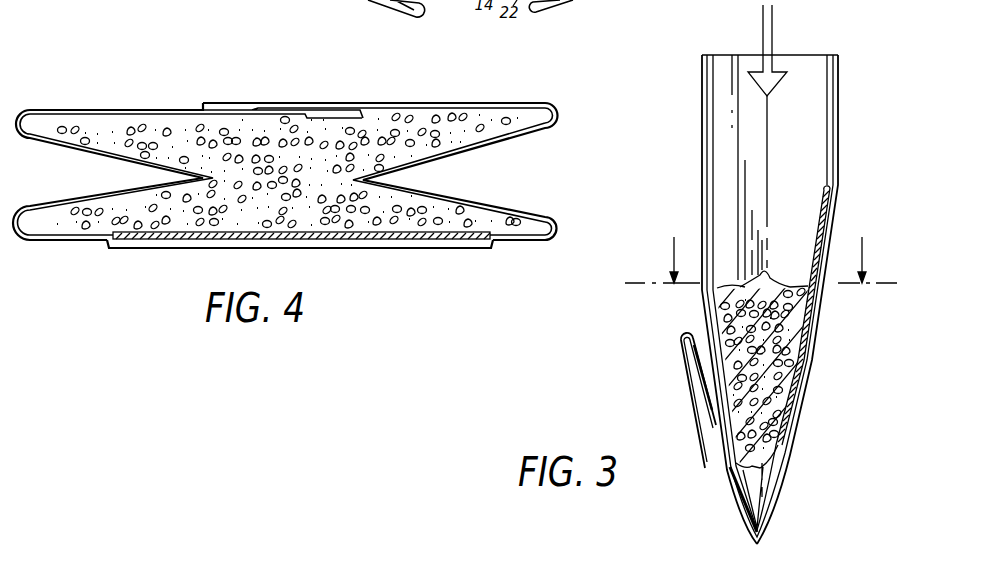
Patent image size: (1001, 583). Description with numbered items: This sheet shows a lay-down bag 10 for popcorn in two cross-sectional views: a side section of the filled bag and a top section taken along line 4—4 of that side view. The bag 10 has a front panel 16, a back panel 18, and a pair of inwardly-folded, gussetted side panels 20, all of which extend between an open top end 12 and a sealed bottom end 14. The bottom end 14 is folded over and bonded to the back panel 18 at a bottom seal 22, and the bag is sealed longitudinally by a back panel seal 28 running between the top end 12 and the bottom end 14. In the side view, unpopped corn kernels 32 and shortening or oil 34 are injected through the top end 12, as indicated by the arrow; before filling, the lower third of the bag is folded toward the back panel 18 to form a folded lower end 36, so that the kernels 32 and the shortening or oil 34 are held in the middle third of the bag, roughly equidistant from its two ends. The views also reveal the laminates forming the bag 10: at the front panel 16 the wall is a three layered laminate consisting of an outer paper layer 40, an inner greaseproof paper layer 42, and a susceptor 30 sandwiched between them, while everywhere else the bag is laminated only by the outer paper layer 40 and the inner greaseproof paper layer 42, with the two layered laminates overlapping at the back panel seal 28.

In FIG. 4, the lay-down bag 10 is at (289, 171).
In FIG. 3, the lay-down bag 10 is at (755, 291).
In FIG. 3, the open top end 12 is at (807, 55).
In FIG. 3, the sealed bottom end 14 is at (697, 408).
In FIG. 4, the front panel 16 is at (228, 248).
In FIG. 3, the front panel 16 is at (843, 156).
In FIG. 4, the back panel 18 is at (98, 109).
In FIG. 3, the back panel 18 is at (690, 172).
In FIG. 4, the gussetted side panels 20 is at (93, 150).
In FIG. 3, the bottom seal 22 is at (684, 352).
In FIG. 4, the back panel seal 28 is at (254, 103).
In FIG. 4, the susceptor 30 is at (444, 240).
In FIG. 4, the unpopped corn kernels 32 is at (343, 207).
In FIG. 3, the unpopped corn kernels 32 is at (793, 370).
In FIG. 4, the shortening or oil 34 is at (373, 227).
In FIG. 3, the shortening or oil 34 is at (790, 402).
In FIG. 3, the folded lower end 36 is at (717, 470).
In FIG. 4, the outer paper layer 40 is at (518, 214).
In FIG. 3, the outer paper layer 40 is at (702, 80).
In FIG. 4, the inner greaseproof paper layer 42 is at (515, 238).
In FIG. 3, the inner greaseproof paper layer 42 is at (727, 58).
In FIG. 3, the section line 4— 4 is at (761, 246).